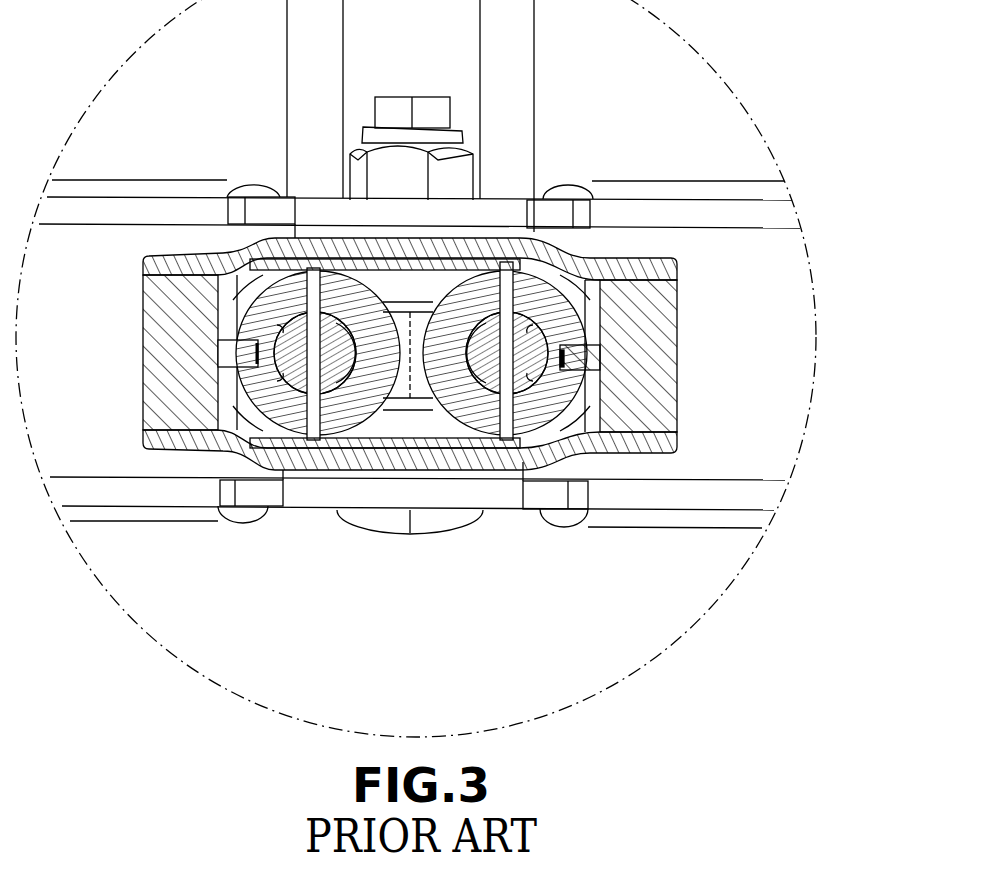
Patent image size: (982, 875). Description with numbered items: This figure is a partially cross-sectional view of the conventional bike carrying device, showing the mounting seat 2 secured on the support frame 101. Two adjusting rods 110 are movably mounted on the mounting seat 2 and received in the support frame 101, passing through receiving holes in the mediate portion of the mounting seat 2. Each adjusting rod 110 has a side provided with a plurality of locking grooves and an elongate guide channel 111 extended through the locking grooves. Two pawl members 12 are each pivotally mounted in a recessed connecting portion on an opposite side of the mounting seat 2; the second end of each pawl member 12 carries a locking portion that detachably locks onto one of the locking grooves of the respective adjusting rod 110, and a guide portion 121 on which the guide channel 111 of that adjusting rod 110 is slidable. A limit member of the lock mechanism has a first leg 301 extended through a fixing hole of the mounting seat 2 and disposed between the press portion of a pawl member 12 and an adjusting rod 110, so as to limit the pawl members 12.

The mounting seat 2 is at (312, 458).
The pawl member 12 is at (653, 377).
The elongate guide channel 111 is at (573, 357).
The guide portion 121 is at (585, 363).
The adjusting rod 110 is at (460, 408).
The support frame 101 is at (378, 449).
The first leg 301 is at (291, 442).